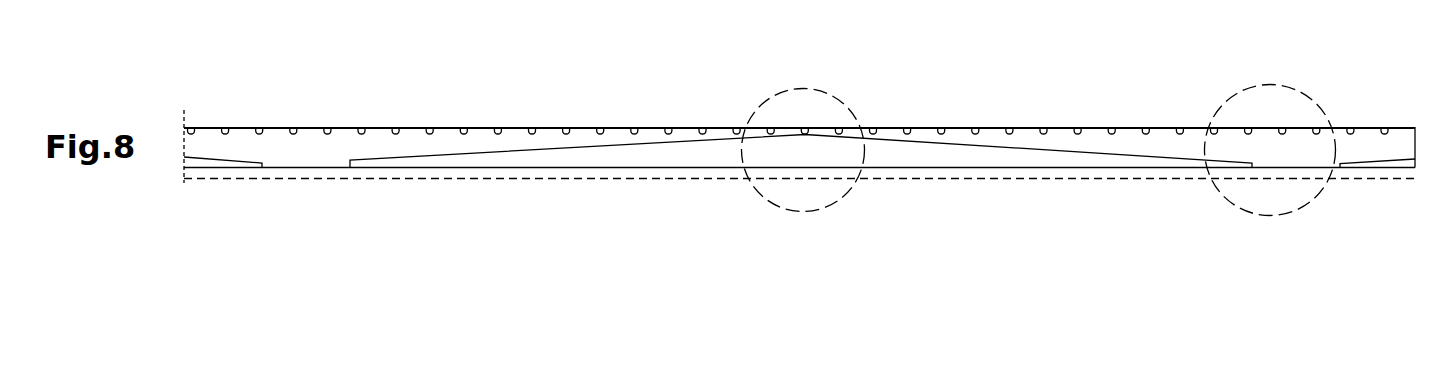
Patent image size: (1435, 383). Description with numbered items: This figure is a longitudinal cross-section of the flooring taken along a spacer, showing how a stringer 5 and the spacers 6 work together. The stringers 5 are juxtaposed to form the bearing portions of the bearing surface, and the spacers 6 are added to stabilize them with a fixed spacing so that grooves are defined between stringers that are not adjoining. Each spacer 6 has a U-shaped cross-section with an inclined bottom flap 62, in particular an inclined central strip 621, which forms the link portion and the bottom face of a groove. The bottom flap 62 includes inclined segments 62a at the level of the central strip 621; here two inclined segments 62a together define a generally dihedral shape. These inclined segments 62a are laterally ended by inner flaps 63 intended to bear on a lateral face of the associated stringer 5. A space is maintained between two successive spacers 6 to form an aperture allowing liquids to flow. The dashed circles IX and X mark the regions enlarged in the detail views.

The stringer 5 is at (800, 116).
The spacer 6 is at (803, 194).
The inner flap 63 is at (672, 157).
The inclined bottom flap 62 is at (788, 94).
The inclined segment 62a is at (788, 94).
The inclined central strip 621 is at (926, 139).
The detail IX is at (770, 97).
The detail X is at (1307, 93).